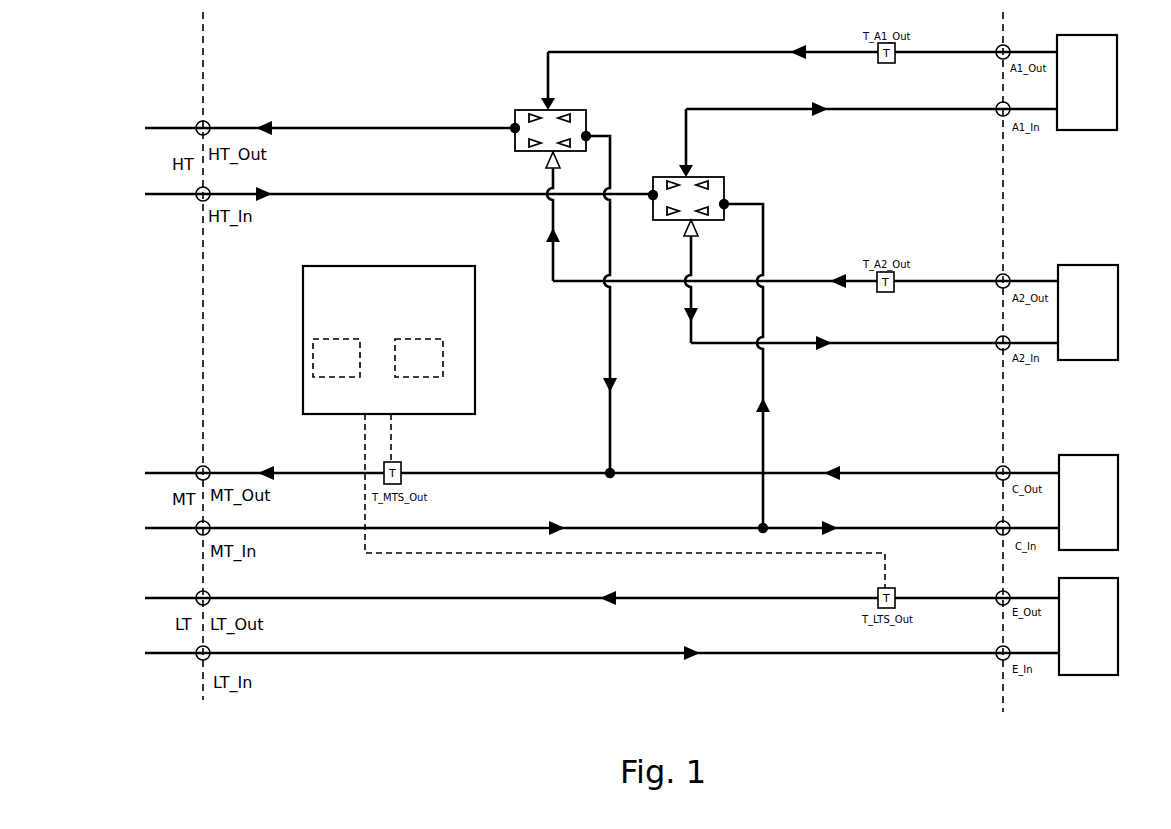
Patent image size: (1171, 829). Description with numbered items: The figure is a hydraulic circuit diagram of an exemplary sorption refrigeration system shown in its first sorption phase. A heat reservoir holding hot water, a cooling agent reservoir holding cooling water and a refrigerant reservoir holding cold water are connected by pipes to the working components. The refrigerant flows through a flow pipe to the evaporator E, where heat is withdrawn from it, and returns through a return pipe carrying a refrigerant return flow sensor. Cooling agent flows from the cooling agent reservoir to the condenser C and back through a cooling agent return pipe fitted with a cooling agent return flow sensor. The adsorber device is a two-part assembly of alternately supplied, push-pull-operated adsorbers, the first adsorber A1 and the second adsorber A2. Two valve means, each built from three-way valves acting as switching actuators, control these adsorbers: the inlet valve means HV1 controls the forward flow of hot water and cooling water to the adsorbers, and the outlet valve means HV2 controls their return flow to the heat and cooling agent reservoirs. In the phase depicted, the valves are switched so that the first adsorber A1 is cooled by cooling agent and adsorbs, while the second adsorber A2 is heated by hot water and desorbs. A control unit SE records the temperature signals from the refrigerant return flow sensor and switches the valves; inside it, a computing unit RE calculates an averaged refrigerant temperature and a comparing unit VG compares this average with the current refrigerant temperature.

The first adsorber A1 is at (1087, 82).
The second adsorber A2 is at (1088, 312).
The condenser C is at (1088, 502).
The evaporator E is at (1088, 626).
The control unit SE is at (389, 340).
The computing unit RE is at (336, 358).
The comparing unit VG is at (419, 358).
The first changeover valve HV1 is at (545, 132).
The second changeover valve HV2 is at (691, 198).